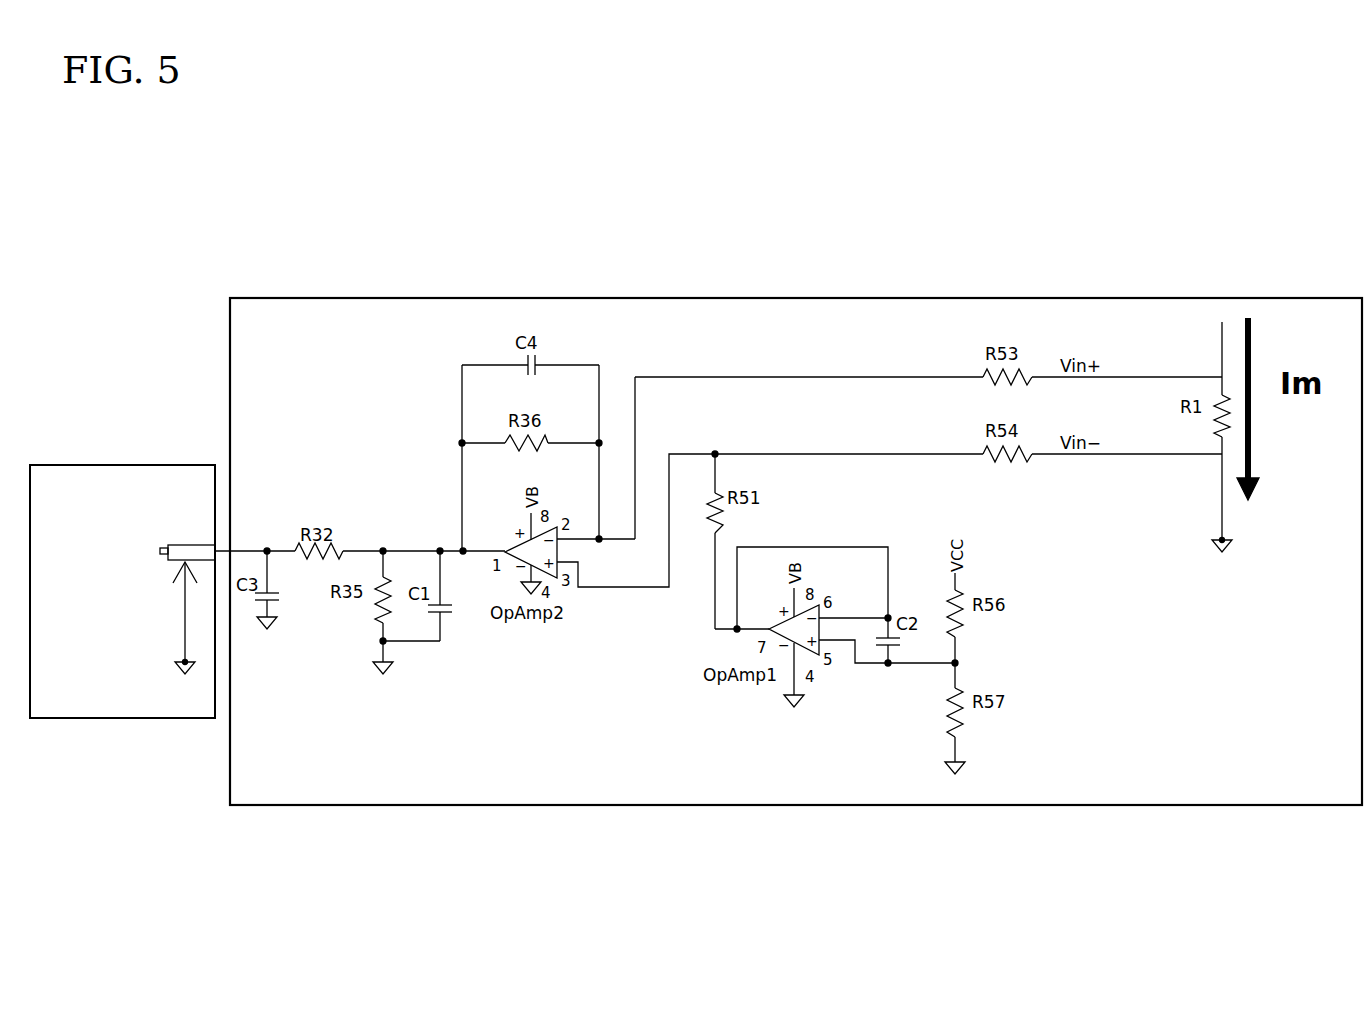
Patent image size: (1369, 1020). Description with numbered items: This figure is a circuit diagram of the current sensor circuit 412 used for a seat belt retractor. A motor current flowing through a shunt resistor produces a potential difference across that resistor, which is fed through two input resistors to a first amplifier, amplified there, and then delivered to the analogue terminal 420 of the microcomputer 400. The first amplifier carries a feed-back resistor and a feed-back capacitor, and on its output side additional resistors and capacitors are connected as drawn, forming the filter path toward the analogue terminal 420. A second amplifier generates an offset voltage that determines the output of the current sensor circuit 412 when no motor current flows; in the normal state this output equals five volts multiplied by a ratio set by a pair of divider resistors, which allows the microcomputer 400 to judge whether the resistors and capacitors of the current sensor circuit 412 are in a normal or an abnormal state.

The microcomputer 400 is at (87, 719).
The current sensor circuit 412 is at (735, 297).
The analogue terminal 420 is at (182, 537).